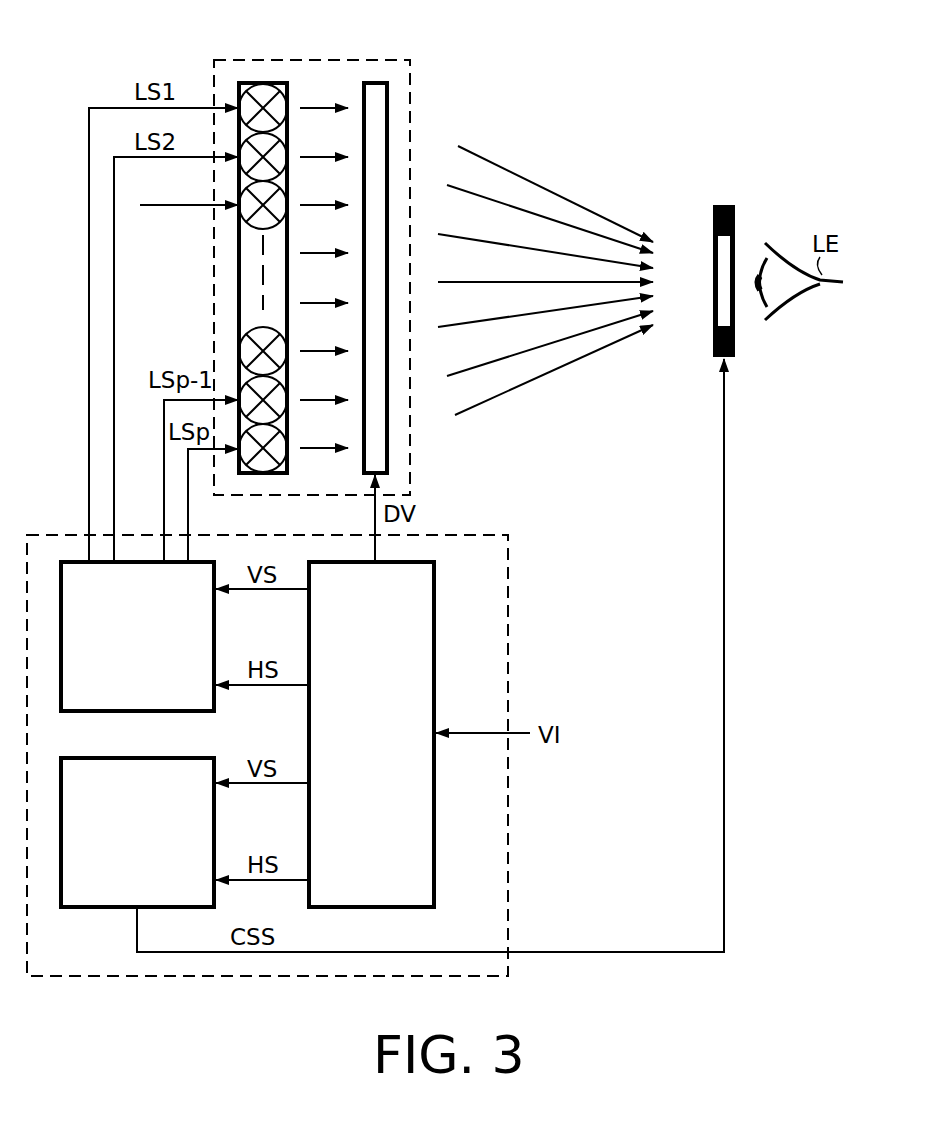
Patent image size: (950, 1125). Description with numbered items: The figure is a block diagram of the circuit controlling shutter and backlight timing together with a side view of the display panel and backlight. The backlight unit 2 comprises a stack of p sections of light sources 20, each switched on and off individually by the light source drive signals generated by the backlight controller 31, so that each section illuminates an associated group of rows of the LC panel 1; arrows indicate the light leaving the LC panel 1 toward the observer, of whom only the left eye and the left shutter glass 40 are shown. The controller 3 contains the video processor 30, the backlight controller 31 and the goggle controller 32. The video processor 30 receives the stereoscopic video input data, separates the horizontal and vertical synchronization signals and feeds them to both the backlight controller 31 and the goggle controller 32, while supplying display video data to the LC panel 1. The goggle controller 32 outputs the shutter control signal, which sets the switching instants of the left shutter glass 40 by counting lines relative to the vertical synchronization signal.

The LC panel 1 is at (374, 88).
The backlight unit 2 is at (250, 82).
The light source 20 is at (250, 210).
The controller 3 is at (509, 551).
The video processor 30 is at (434, 580).
The backlight controller 31 is at (105, 703).
The goggle controller 32 is at (105, 898).
The left shutter glass 40 is at (723, 204).